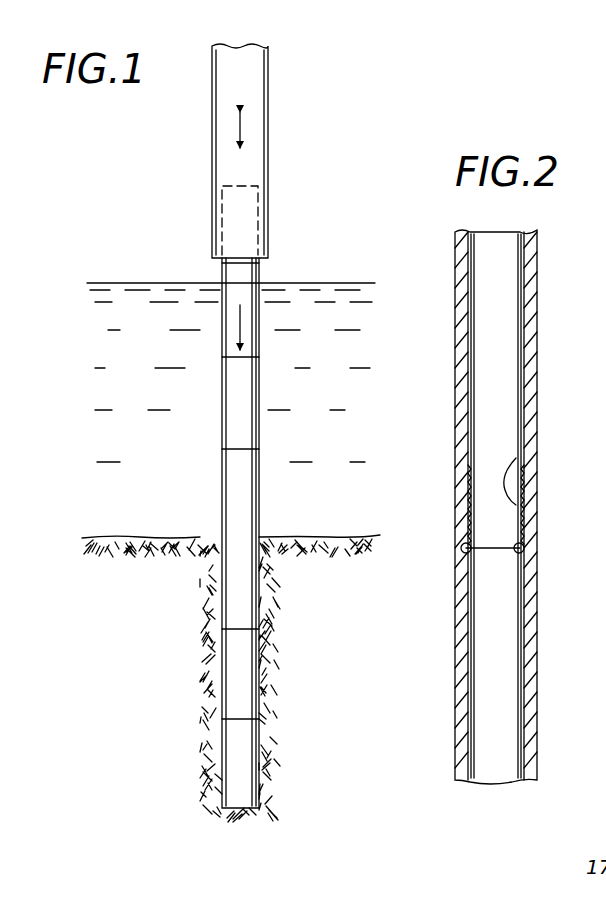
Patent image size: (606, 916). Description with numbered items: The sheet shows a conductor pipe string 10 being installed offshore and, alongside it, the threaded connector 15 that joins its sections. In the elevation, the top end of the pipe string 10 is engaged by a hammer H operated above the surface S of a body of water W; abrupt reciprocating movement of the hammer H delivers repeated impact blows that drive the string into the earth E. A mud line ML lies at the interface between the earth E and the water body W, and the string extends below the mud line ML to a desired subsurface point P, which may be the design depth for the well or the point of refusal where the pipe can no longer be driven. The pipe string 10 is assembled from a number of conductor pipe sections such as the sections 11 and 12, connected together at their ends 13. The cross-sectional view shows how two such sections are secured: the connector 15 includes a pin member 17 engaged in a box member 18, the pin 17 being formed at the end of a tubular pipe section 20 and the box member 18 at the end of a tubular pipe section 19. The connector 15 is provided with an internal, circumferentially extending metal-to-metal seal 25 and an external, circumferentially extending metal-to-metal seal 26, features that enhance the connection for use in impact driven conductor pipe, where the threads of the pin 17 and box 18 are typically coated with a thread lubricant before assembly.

In FIG. 1, the hammer H is at (268, 86).
In FIG. 1, the surface S is at (145, 283).
In FIG. 1, the body of water W is at (112, 410).
In FIG. 1, the mud line ML is at (120, 537).
In FIG. 1, the earth E is at (165, 645).
In FIG. 1, the subsurface point P is at (243, 808).
In FIG. 1, the conductor pipe string 10 is at (241, 562).
In FIG. 1, the conductor pipe section 11 is at (252, 375).
In FIG. 1, the conductor pipe section 12 is at (255, 503).
In FIG. 1, the ends 13 is at (222, 452).
In FIG. 2, the threaded connector 15 is at (447, 455).
In FIG. 2, the pin member 17 is at (516, 462).
In FIG. 2, the box member 18 is at (537, 497).
In FIG. 2, the tubular pipe section 19 is at (537, 698).
In FIG. 2, the tubular pipe section 20 is at (537, 288).
In FIG. 2, the internal metal-to-metal seal 25 is at (525, 556).
In FIG. 2, the external metal-to-metal seal 26 is at (458, 467).